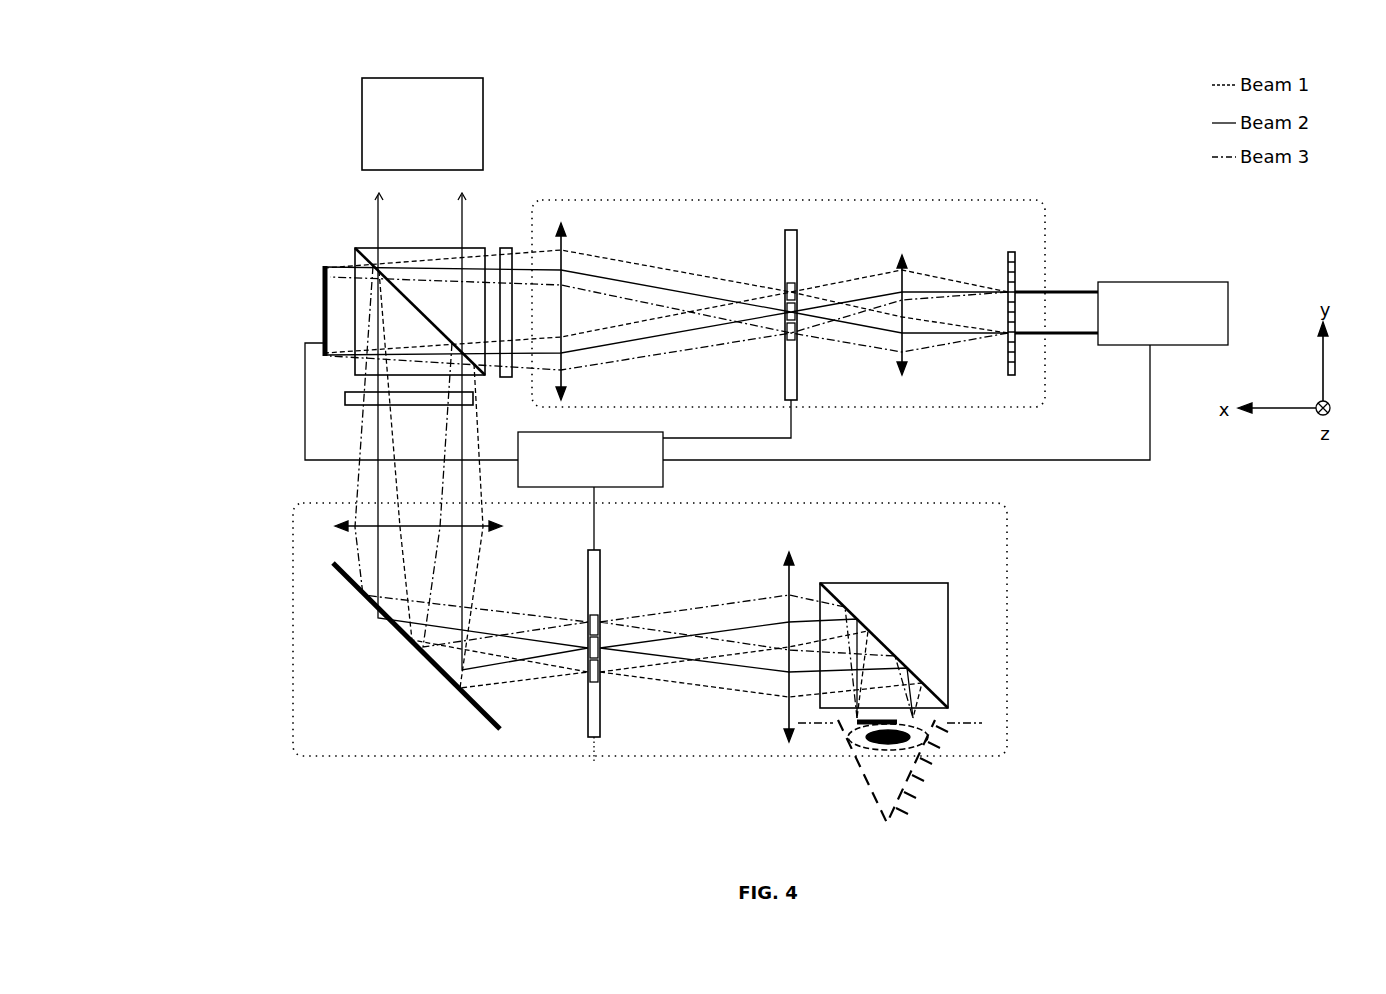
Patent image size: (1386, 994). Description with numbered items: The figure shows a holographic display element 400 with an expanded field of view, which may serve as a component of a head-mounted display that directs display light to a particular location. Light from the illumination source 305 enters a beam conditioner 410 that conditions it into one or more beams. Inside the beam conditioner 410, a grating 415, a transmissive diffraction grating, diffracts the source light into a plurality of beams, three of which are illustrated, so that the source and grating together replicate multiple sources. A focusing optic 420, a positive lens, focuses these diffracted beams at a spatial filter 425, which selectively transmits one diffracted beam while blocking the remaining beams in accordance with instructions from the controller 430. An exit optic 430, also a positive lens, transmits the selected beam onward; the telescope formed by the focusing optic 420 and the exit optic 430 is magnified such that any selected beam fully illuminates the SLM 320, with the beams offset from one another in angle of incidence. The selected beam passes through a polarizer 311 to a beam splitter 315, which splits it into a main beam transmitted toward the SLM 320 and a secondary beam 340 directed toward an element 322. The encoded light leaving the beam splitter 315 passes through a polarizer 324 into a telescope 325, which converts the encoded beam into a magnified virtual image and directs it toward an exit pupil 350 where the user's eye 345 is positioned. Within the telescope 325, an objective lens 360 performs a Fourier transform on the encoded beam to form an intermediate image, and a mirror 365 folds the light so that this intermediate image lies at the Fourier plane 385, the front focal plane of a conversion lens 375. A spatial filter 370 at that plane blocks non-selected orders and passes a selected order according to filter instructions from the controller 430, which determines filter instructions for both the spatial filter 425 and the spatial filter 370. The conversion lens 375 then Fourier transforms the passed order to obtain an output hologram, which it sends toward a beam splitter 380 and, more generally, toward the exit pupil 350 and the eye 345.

The holographic display element 400 is at (205, 131).
The illumination source 305 is at (1146, 333).
The polarizer 311 is at (505, 248).
The beam splitter 315 is at (291, 217).
The SLM 320 is at (322, 297).
The element 322 is at (405, 147).
The polarizer 324 is at (345, 398).
The telescope 325 is at (293, 740).
The secondary beam 340 is at (463, 213).
The eye 345 is at (878, 877).
The exit pupil 350 is at (927, 723).
The objective lens 360 is at (340, 520).
The mirror 365 is at (365, 600).
The spatial filter 370 is at (587, 690).
The conversion lens 375 is at (787, 700).
The beam splitter 380 is at (945, 645).
The Fourier plane 385 is at (578, 835).
The beam conditioner 410 is at (1027, 200).
The grating 415 is at (1013, 252).
The focusing optic 420 is at (902, 255).
The spatial filter 425 is at (786, 230).
The exit optic 430 is at (573, 481).